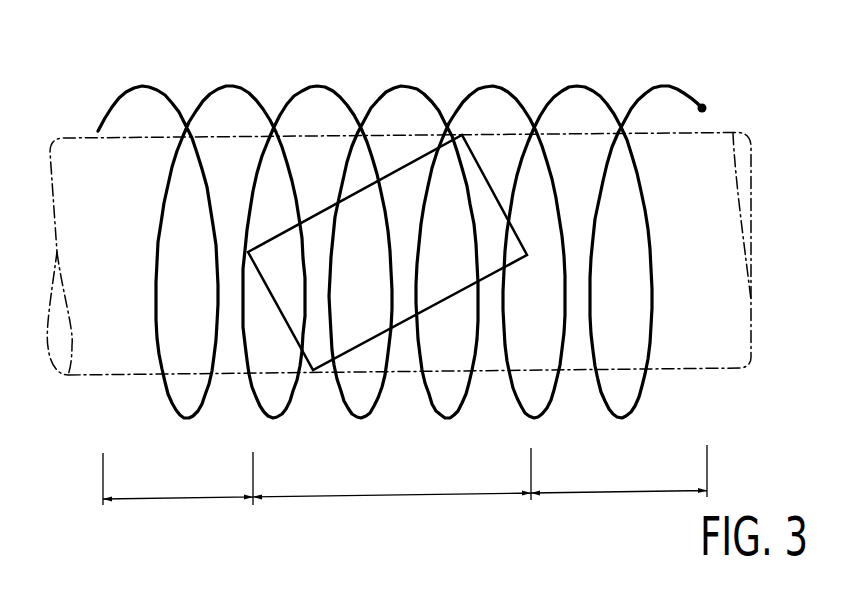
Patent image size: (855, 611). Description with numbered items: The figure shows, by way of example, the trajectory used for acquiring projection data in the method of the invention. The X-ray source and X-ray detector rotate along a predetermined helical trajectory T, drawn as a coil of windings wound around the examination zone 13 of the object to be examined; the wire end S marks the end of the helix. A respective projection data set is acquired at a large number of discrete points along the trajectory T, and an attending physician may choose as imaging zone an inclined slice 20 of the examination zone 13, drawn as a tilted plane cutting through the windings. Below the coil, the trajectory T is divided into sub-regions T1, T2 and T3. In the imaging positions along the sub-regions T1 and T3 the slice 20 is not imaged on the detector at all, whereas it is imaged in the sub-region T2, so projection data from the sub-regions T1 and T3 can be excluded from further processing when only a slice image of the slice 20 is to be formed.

The examination zone 13 is at (329, 136).
The inclined slice 20 is at (403, 137).
The helical trajectory T is at (645, 206).
The wire end S is at (704, 106).
The sub-region of the trajectory T1 is at (178, 478).
The sub-region of the trajectory T2 is at (392, 474).
The sub-region of the trajectory T3 is at (619, 471).